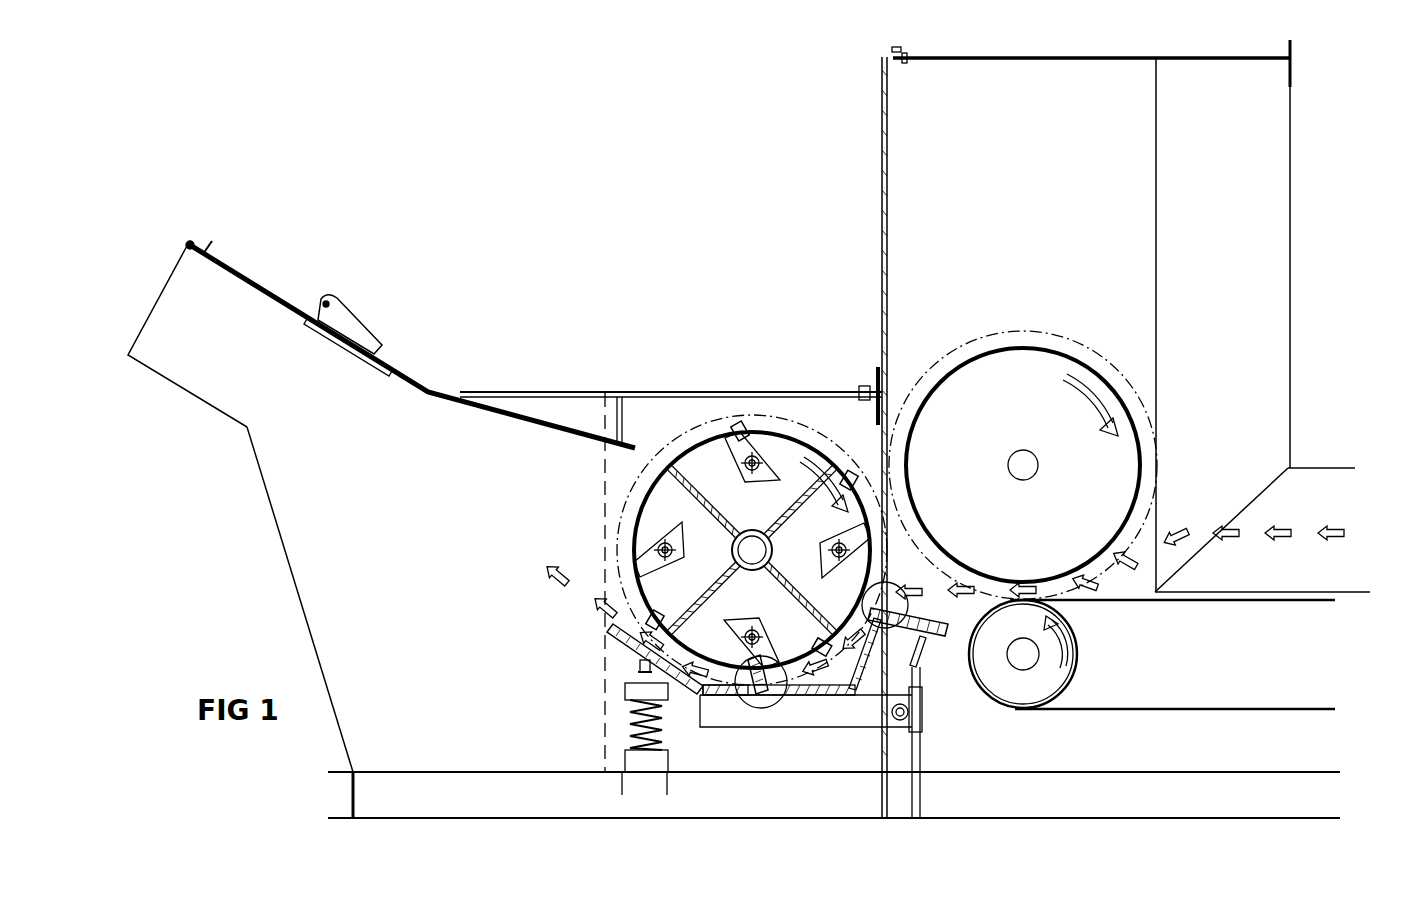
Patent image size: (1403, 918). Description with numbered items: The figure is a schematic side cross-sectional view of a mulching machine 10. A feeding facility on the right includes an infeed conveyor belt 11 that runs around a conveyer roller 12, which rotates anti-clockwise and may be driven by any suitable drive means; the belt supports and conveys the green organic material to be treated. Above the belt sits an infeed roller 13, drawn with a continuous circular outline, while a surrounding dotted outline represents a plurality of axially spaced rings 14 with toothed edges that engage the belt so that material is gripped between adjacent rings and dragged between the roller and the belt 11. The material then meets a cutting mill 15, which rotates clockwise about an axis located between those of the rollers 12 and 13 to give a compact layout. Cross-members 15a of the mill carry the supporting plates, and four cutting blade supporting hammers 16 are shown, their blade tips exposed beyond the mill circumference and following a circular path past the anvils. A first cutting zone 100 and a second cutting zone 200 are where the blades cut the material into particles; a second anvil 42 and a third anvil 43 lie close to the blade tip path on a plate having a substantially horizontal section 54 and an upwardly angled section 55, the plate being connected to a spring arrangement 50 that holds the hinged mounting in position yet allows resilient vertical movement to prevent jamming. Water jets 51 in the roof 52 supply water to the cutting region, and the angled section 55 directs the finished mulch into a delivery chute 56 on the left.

The mulching machine 10 is at (655, 178).
The infeed conveyor belt 11 is at (1182, 710).
The conveyer roller 12 is at (1020, 685).
The infeed roller 13 is at (968, 388).
The axially spaced rings 14 is at (1068, 338).
The cutting mill 15 is at (792, 413).
The cross-members 15a is at (612, 575).
The cutting blade supporting hammers 16 is at (673, 525).
The second anvil 42 is at (713, 697).
The third anvil 43 is at (755, 690).
The spring arrangement 50 is at (603, 722).
The water jets 51 is at (862, 386).
The roof 52 is at (510, 390).
The plate section 54 is at (822, 697).
The upwardly angled plate section 55 is at (625, 665).
The delivery chute 56 is at (232, 300).
The first cutting zone 100 is at (890, 632).
The second cutting zone 200 is at (757, 700).